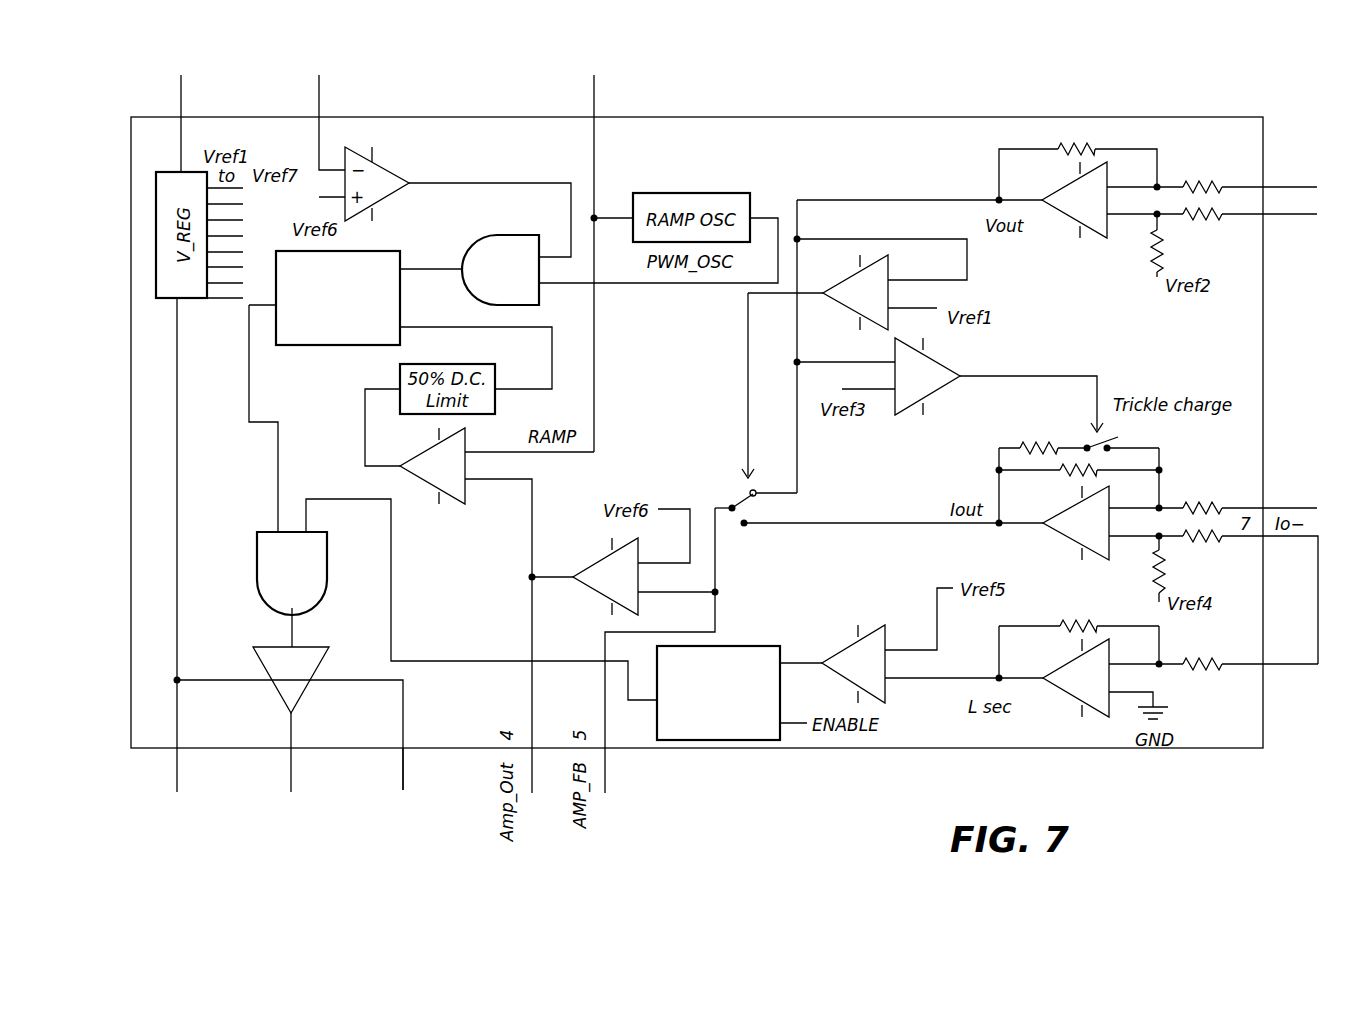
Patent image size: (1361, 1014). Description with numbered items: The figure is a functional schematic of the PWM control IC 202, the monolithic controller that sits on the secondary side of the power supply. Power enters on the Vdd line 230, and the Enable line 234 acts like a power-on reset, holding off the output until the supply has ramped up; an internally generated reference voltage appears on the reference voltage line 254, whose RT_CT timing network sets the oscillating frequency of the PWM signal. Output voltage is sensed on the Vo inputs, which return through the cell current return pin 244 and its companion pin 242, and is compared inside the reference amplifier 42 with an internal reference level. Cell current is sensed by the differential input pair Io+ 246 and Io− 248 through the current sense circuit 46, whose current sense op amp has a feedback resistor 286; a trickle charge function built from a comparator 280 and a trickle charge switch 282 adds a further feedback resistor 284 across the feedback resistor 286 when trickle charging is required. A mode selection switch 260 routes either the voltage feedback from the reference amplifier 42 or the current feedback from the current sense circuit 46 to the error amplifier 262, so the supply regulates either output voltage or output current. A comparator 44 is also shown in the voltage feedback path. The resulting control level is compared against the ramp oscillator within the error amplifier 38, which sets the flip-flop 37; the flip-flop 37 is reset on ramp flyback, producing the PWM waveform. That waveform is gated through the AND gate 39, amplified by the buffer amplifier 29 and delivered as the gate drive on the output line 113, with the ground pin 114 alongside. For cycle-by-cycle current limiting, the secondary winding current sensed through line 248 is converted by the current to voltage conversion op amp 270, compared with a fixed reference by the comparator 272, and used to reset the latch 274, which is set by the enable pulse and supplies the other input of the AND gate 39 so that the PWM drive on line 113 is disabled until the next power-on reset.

The PWM control IC 202 is at (802, 787).
The reference voltage line 254 is at (181, 97).
The Enable line 234 is at (319, 97).
The cell current return pin 244 is at (594, 97).
The Vo+ pin 242 is at (1300, 185).
The flip-flop 37 is at (305, 346).
The error amplifier 38 is at (447, 505).
The AND gate 39 is at (327, 549).
The buffer amplifier 29 is at (300, 690).
The Vdd line 230 is at (177, 785).
The output line 113 is at (291, 785).
The GND pin 114 is at (403, 785).
The error amplifier 262 is at (597, 601).
The mode selection switch 260 is at (735, 527).
The voltage comparator 44 is at (843, 311).
The comparator 280 is at (901, 416).
The reference amplifier 42 is at (1075, 222).
The feedback resistor 284 is at (1034, 442).
The trickle charge switch 282 is at (1118, 437).
The feedback resistor 286 is at (1068, 476).
The current sense circuit 46 is at (1096, 563).
The differential input Io+ 246 is at (1300, 506).
The current to voltage conversion op amp 270 is at (1072, 698).
The differential input Io− 248 is at (1276, 668).
The comparator 272 is at (870, 628).
The latch 274 is at (750, 646).